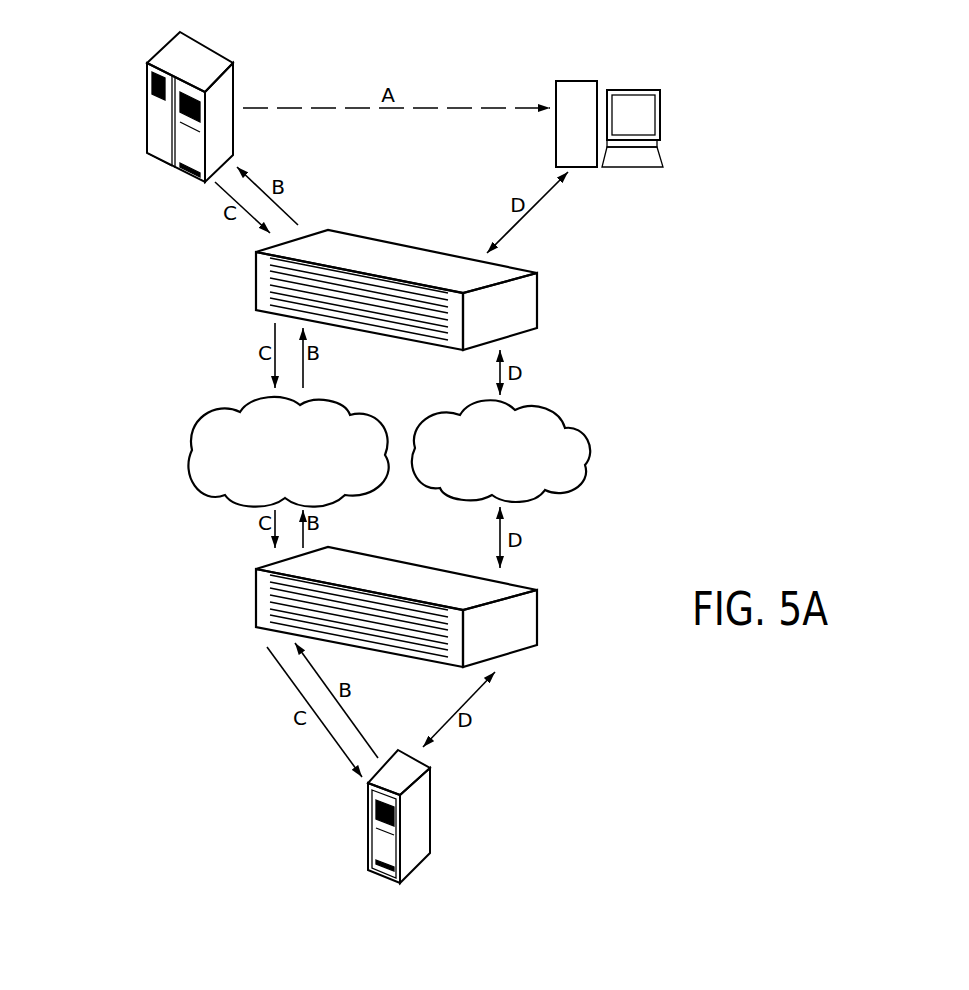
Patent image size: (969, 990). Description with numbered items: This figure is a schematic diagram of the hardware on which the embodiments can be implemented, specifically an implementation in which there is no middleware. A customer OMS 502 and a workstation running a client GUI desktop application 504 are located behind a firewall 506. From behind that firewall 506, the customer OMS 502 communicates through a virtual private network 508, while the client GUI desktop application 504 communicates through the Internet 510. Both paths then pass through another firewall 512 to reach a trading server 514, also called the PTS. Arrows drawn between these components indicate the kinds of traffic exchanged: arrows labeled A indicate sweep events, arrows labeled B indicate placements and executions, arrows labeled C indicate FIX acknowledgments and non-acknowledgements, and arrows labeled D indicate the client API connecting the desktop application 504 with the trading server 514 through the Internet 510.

The customer OMS 502 is at (237, 80).
The workstation running a client GUI (desktop application) 504 is at (637, 90).
The firewall 506 is at (540, 290).
The virtual private network 508 is at (193, 436).
The Internet 510 is at (612, 431).
The firewall 512 is at (538, 608).
The trading server (PTS) 514 is at (432, 810).